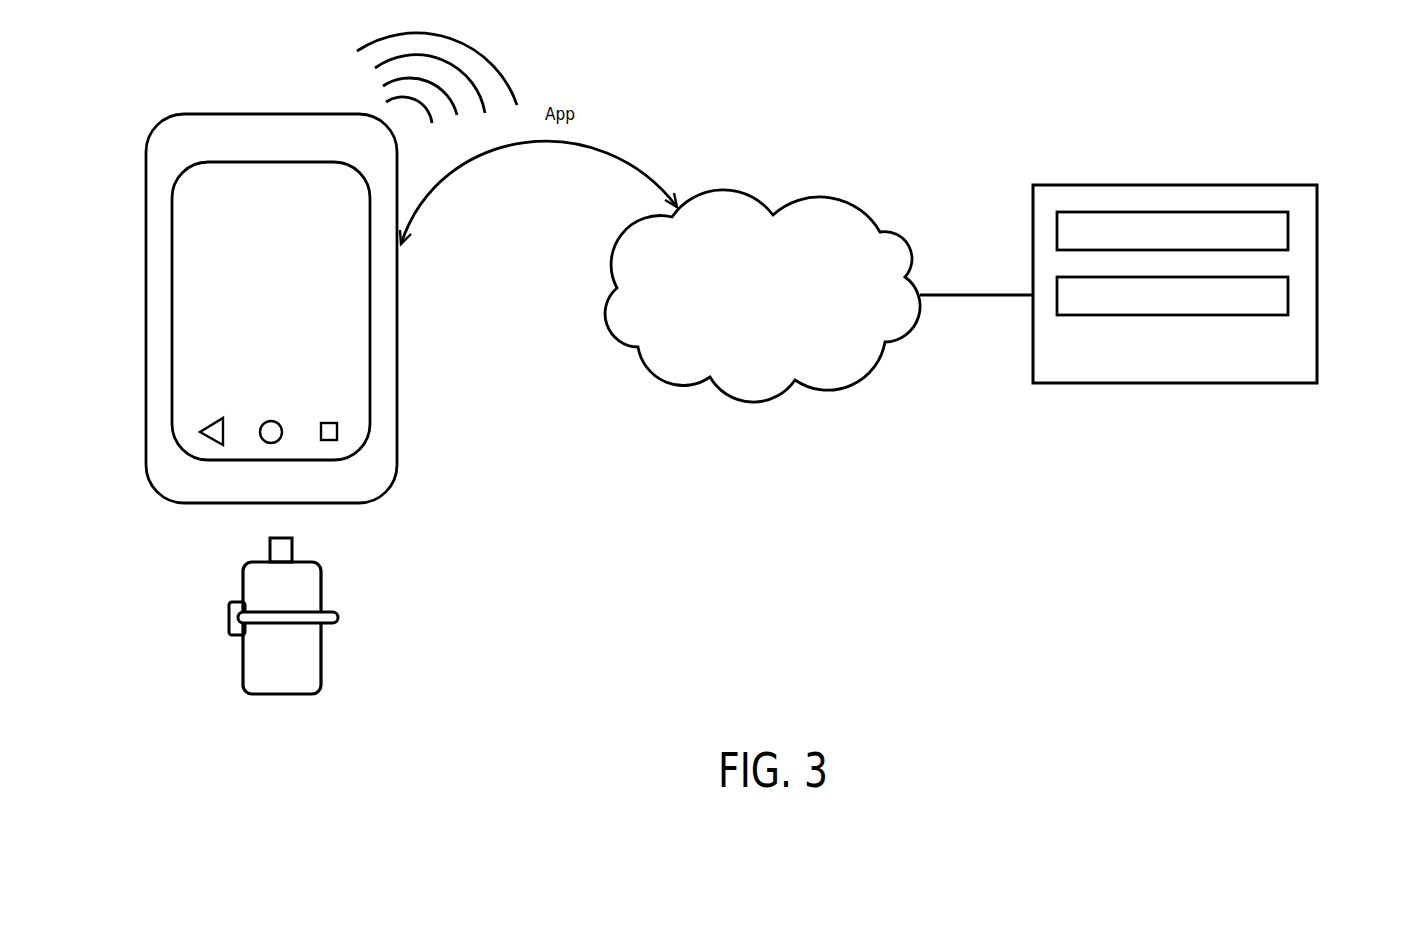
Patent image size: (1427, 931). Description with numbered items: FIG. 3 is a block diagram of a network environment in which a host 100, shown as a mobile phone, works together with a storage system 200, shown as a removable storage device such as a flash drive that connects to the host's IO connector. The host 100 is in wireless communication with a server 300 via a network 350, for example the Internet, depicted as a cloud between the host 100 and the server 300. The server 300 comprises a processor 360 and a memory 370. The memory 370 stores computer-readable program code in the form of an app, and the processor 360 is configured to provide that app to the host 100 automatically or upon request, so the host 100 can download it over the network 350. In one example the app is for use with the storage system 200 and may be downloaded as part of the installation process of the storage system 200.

The host 100 is at (146, 342).
The storage system 200 is at (243, 663).
The server 300 is at (1082, 185).
The network 350 is at (758, 197).
The processor 360 is at (1288, 232).
The memory 370 is at (1288, 297).